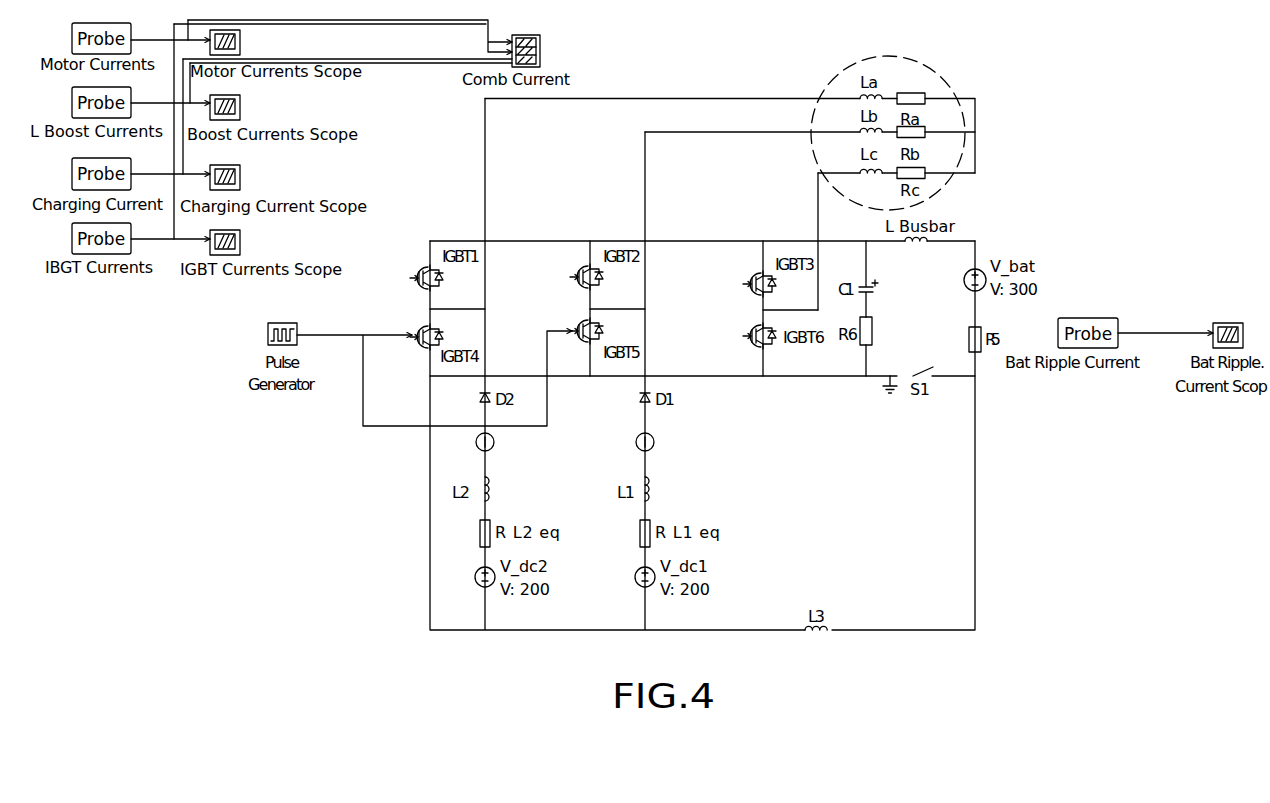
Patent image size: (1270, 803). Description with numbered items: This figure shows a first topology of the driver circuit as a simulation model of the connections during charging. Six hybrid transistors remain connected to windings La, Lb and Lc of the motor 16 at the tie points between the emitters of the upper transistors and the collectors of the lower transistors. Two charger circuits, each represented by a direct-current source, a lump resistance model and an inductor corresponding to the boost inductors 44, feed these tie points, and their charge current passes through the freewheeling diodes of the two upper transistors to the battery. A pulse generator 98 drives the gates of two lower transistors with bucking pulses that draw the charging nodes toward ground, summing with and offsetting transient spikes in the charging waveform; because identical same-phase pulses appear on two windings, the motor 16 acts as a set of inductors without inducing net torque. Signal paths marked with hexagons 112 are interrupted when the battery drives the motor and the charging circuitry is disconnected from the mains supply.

The motor 16 is at (838, 68).
The pulse generator 98 is at (265, 335).
The hexagons 112 is at (494, 440).
The boost inductors 44 is at (490, 482).